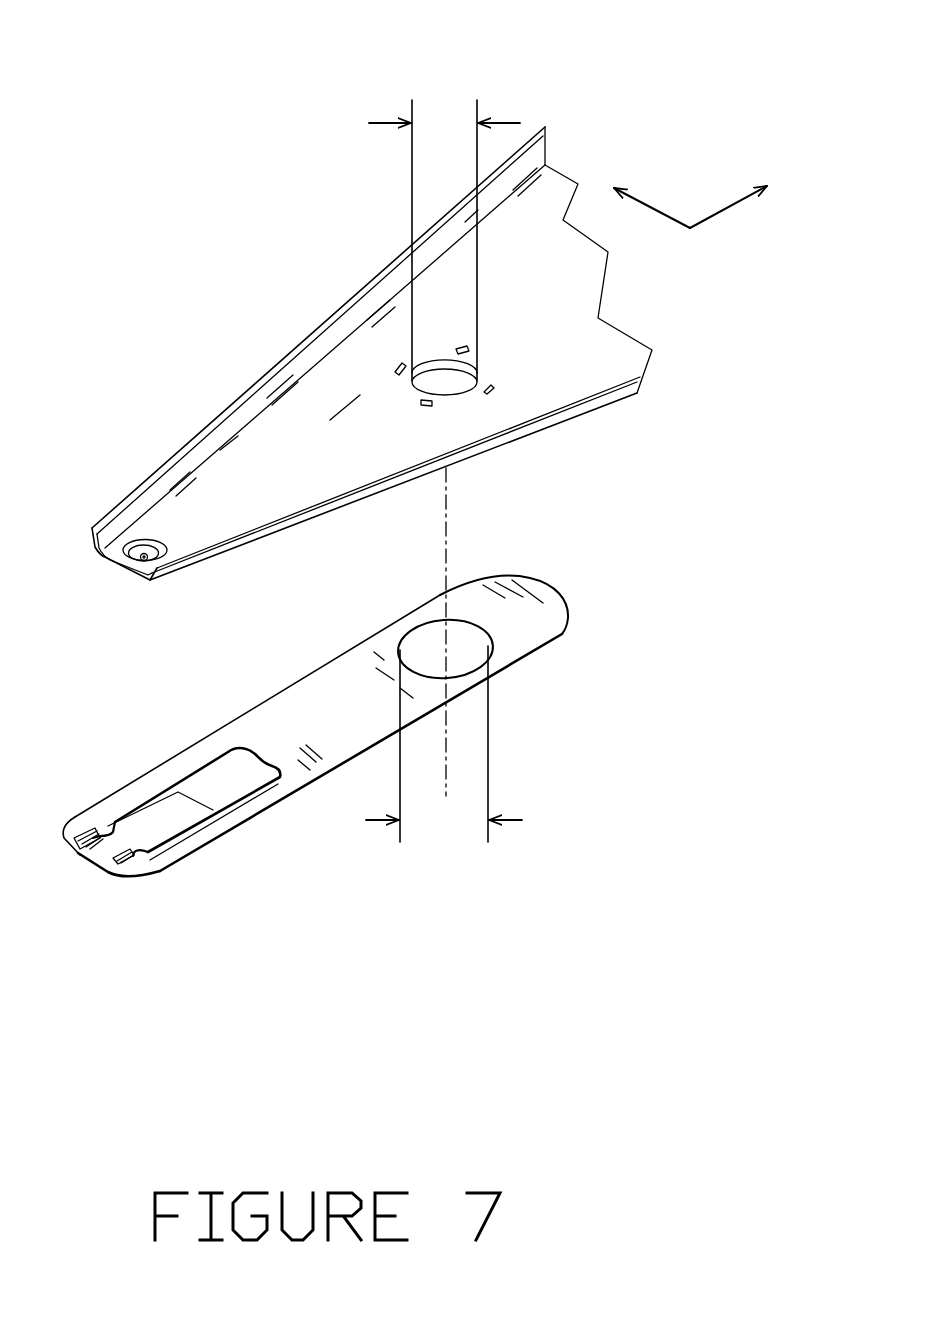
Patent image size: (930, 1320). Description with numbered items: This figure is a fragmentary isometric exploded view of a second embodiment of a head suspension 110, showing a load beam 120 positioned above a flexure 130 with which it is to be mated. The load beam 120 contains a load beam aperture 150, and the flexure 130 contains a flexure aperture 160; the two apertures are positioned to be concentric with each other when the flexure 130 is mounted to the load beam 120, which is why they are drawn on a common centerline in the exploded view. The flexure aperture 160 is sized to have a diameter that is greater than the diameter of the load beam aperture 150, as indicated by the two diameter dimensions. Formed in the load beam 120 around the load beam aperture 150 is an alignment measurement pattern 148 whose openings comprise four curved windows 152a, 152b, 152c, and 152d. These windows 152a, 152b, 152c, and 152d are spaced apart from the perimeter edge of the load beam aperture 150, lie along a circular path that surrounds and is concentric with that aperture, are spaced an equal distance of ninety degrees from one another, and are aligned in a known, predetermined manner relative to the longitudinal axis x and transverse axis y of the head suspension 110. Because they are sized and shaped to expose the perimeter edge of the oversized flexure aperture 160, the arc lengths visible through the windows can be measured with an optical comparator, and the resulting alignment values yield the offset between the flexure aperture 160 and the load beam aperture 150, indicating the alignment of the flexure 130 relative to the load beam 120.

The head suspension 110 is at (532, 108).
The load beam 120 is at (232, 355).
The flexure 130 is at (342, 804).
The alignment measurement pattern 148 is at (378, 402).
The load beam aperture 150 is at (452, 380).
The curved window 152a is at (464, 350).
The curved window 152b is at (490, 387).
The curved window 152c is at (422, 403).
The curved window 152d is at (399, 366).
The flexure aperture 160 is at (475, 657).